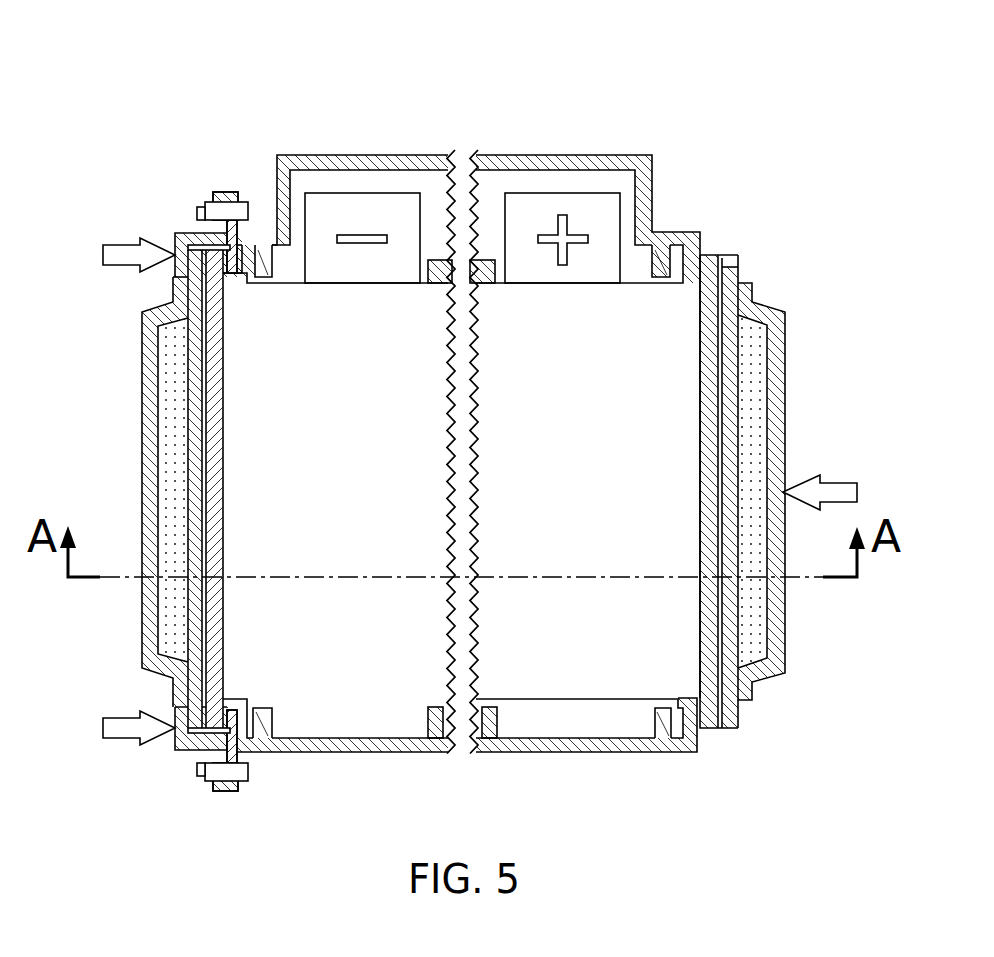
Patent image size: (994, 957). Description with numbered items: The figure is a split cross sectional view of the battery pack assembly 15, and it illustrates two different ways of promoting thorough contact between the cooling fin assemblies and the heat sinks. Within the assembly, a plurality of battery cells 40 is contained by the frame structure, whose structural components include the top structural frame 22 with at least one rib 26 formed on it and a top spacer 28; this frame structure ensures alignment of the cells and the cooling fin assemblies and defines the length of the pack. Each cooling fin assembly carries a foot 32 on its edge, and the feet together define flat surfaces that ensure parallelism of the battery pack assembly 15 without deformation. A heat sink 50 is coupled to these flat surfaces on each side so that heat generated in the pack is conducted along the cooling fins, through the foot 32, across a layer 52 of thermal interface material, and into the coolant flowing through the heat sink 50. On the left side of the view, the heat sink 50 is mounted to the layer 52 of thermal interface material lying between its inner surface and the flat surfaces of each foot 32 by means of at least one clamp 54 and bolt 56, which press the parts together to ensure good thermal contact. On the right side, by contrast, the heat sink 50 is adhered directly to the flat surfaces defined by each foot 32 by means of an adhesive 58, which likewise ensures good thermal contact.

The battery pack assembly 15 is at (161, 118).
The top structural frame 22 is at (497, 165).
The rib 26 is at (263, 245).
The top spacer 28 is at (487, 290).
The foot 32 is at (708, 262).
The battery cell 40 is at (388, 200).
The heat sink 50 is at (142, 350).
The layer of thermal interface material 52 is at (208, 476).
The clamp 54 is at (175, 233).
The bolt 56 is at (206, 204).
The adhesive 58 is at (722, 262).